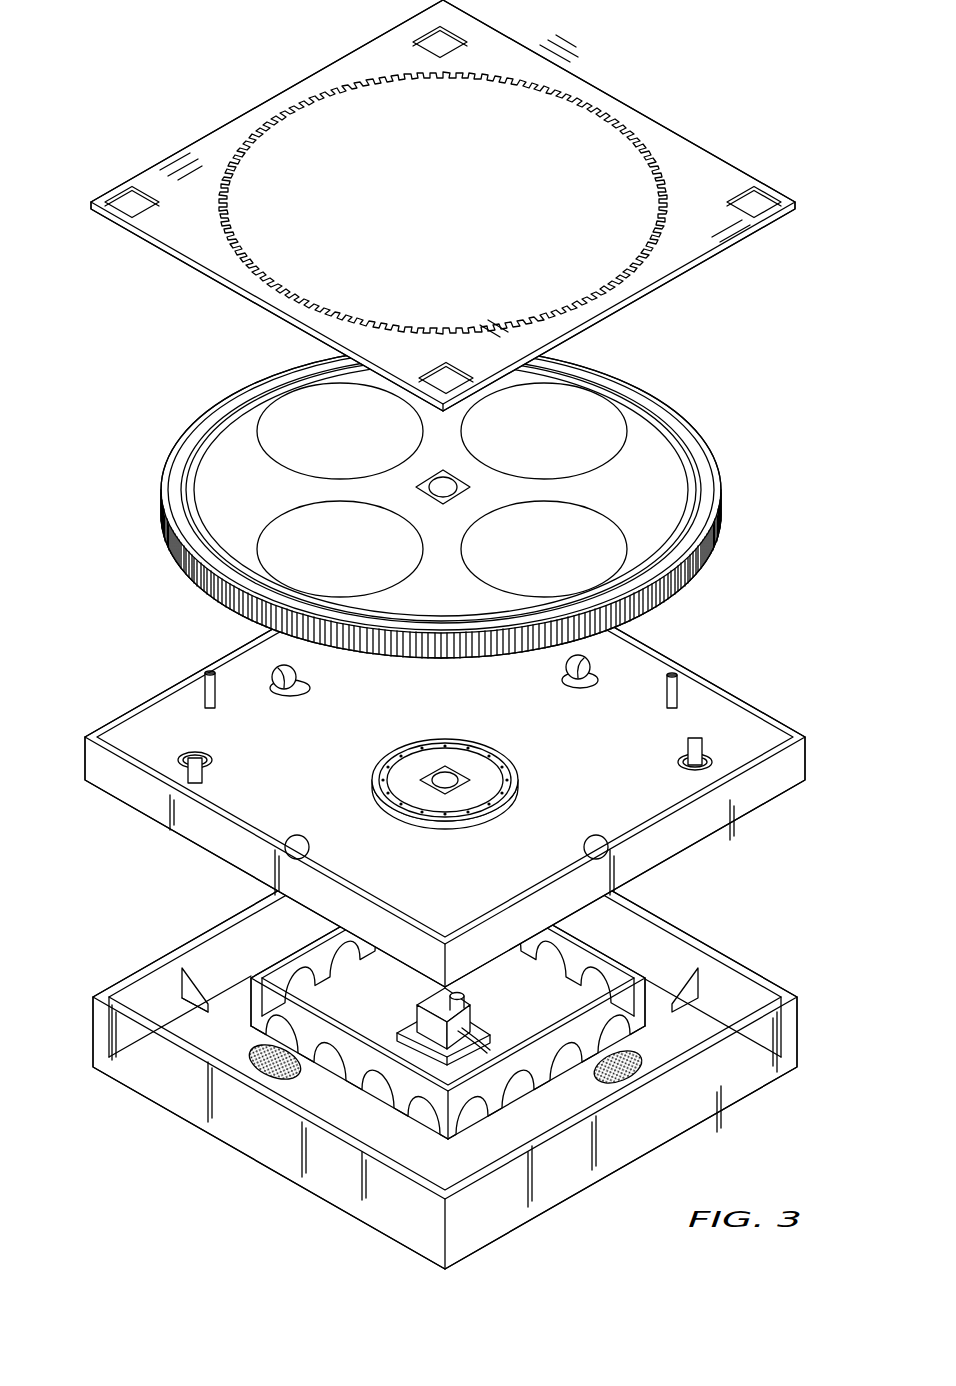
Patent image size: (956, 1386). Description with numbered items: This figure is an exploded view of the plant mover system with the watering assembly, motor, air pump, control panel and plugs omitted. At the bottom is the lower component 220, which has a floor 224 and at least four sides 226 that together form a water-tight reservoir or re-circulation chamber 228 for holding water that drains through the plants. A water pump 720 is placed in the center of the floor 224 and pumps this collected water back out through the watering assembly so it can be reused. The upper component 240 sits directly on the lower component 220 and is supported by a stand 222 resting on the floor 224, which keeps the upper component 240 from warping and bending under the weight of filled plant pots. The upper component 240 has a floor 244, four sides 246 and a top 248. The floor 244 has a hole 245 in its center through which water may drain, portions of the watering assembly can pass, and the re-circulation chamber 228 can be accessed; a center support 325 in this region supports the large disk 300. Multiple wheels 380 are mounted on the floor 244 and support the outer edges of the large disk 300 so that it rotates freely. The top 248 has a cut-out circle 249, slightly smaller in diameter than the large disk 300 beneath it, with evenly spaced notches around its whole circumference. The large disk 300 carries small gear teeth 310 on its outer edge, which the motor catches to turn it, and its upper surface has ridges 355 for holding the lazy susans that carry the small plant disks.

The lower component 220 is at (828, 1068).
The stand 222 is at (627, 1010).
The floor 224 is at (425, 1137).
The sides 226 is at (163, 955).
The re-circulation chamber 228 is at (228, 1032).
The upper component 240 is at (828, 795).
The floor 244 is at (610, 697).
The hole 245 is at (423, 485).
The sides 246 is at (175, 682).
The top 248 is at (622, 112).
The cut-out circle 249 is at (505, 78).
The large disk 300 is at (677, 475).
The gear teeth 310 is at (722, 515).
The center support 325 is at (377, 785).
The ridges 355 is at (605, 512).
The wheels 380 is at (270, 687).
The water pump 720 is at (427, 1025).